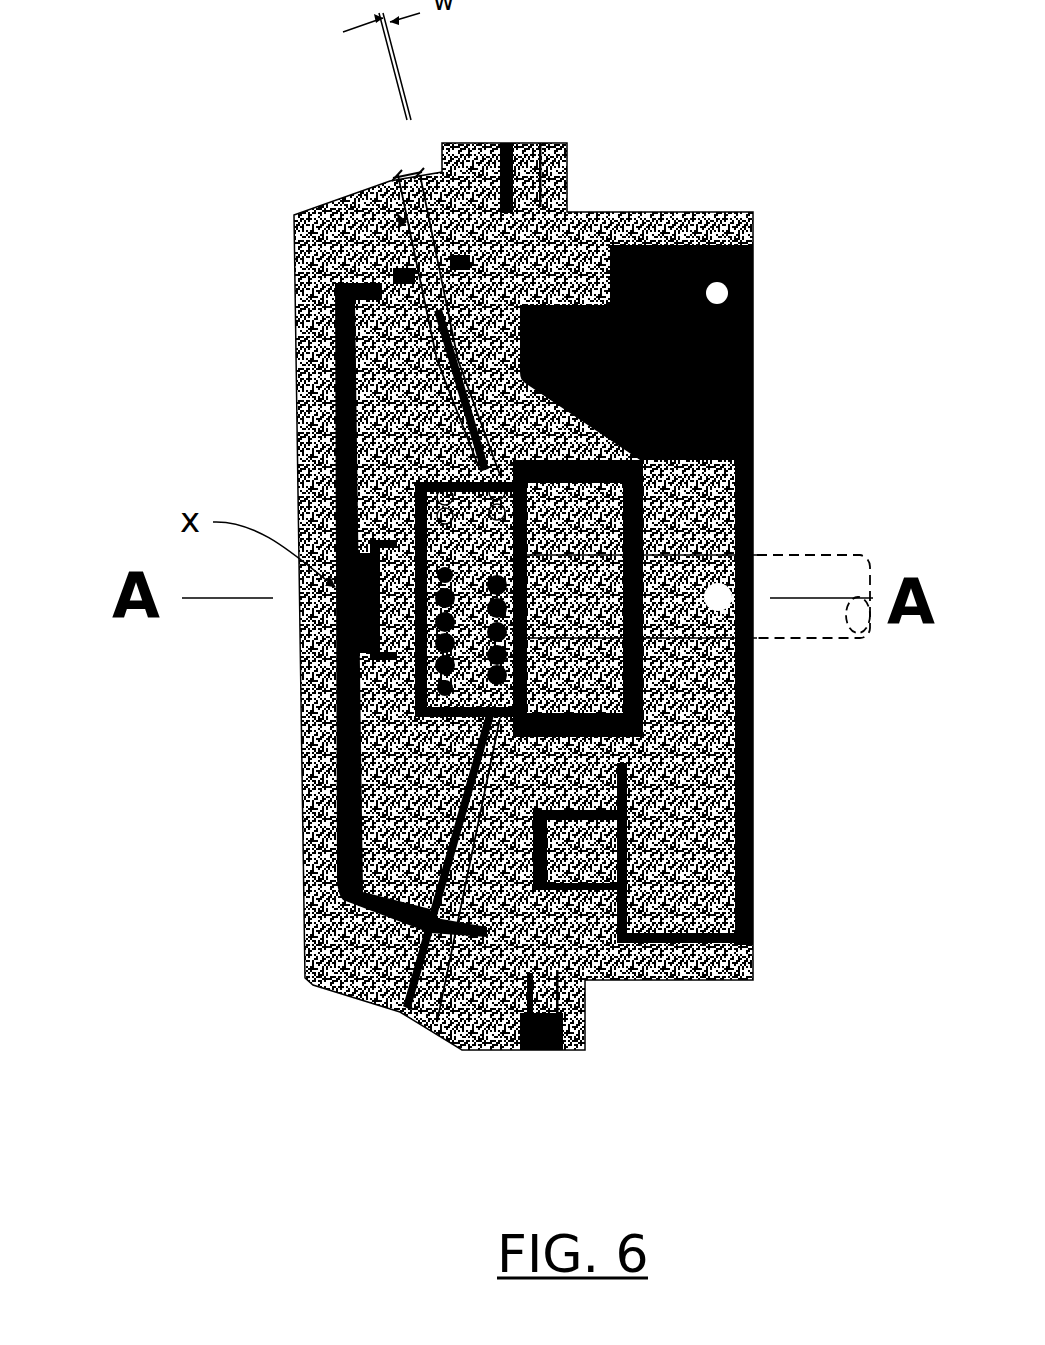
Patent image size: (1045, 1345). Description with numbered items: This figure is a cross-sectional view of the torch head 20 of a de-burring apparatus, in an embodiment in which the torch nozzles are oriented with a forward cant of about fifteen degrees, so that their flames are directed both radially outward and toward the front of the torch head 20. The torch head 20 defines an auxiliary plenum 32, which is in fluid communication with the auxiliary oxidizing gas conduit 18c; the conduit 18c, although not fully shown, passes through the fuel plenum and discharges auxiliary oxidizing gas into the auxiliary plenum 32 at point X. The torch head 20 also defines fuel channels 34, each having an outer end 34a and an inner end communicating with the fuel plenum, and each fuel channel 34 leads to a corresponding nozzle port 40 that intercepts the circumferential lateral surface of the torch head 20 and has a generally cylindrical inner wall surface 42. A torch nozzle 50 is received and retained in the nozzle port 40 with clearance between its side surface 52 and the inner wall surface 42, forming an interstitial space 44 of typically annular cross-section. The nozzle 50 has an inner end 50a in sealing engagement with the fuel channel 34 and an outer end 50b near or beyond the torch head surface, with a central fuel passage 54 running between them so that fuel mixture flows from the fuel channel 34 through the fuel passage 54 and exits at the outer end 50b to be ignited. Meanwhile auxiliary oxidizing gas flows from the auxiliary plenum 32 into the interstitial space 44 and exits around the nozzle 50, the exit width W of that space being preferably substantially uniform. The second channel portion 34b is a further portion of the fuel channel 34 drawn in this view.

The torch head 20 is at (257, 1140).
The auxiliary plenum 32 is at (345, 708).
The fuel channel 34 is at (440, 402).
The outer end of fuel channel 34a is at (462, 727).
The second passage portion 34b is at (420, 880).
The nozzle port 40 is at (407, 920).
The inner wall surface 42 is at (420, 1005).
The interstitial space 44 is at (418, 166).
The torch nozzle 50 is at (403, 217).
The inner end of nozzle 50a is at (465, 292).
The outer end of nozzle 50b is at (390, 177).
The side surface of nozzle 52 is at (405, 290).
The fuel passage 54 is at (397, 166).
The auxiliary oxidizing gas conduit 18c is at (817, 553).